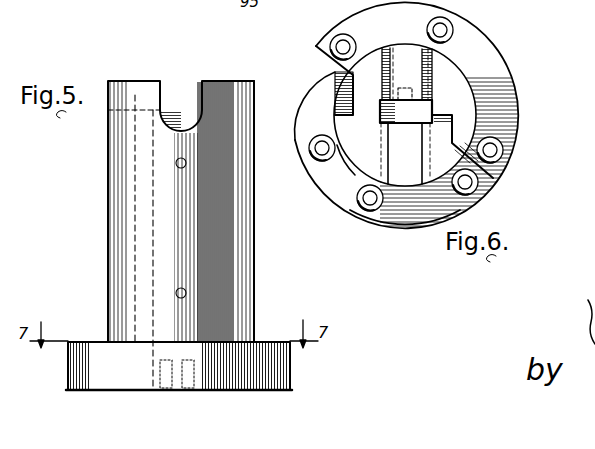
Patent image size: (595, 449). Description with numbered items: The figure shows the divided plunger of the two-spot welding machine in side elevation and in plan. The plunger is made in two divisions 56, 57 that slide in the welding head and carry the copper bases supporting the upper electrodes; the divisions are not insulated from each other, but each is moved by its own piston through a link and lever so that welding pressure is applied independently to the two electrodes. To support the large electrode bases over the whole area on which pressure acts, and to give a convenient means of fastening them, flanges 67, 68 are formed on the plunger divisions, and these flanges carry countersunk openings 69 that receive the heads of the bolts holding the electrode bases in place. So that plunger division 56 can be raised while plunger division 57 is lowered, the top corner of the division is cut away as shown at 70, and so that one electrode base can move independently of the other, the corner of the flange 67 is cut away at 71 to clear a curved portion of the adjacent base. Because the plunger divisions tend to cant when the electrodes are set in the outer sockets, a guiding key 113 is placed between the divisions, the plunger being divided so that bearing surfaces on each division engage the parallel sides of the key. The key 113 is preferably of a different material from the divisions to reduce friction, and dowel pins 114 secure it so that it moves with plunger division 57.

In FIG. 5, the plunger division 56 is at (108, 186).
In FIG. 6, the plunger division 56 is at (360, 160).
In FIG. 5, the plunger division 57 is at (254, 176).
In FIG. 6, the plunger division 57 is at (462, 82).
In FIG. 5, the flange 67 is at (68, 382).
In FIG. 6, the flange 67 is at (384, 218).
In FIG. 5, the flange 68 is at (290, 379).
In FIG. 6, the flange 68 is at (513, 86).
In FIG. 6, the countersunk openings 69 is at (309, 148).
In FIG. 6, the cut-away top corner 70 is at (338, 87).
In FIG. 6, the cut-away corner of flange 71 is at (330, 70).
In FIG. 6, the key 113 is at (442, 130).
In FIG. 5, the dowel pins 114 is at (176, 163).
In FIG. 6, the dowel pins 114 is at (405, 88).